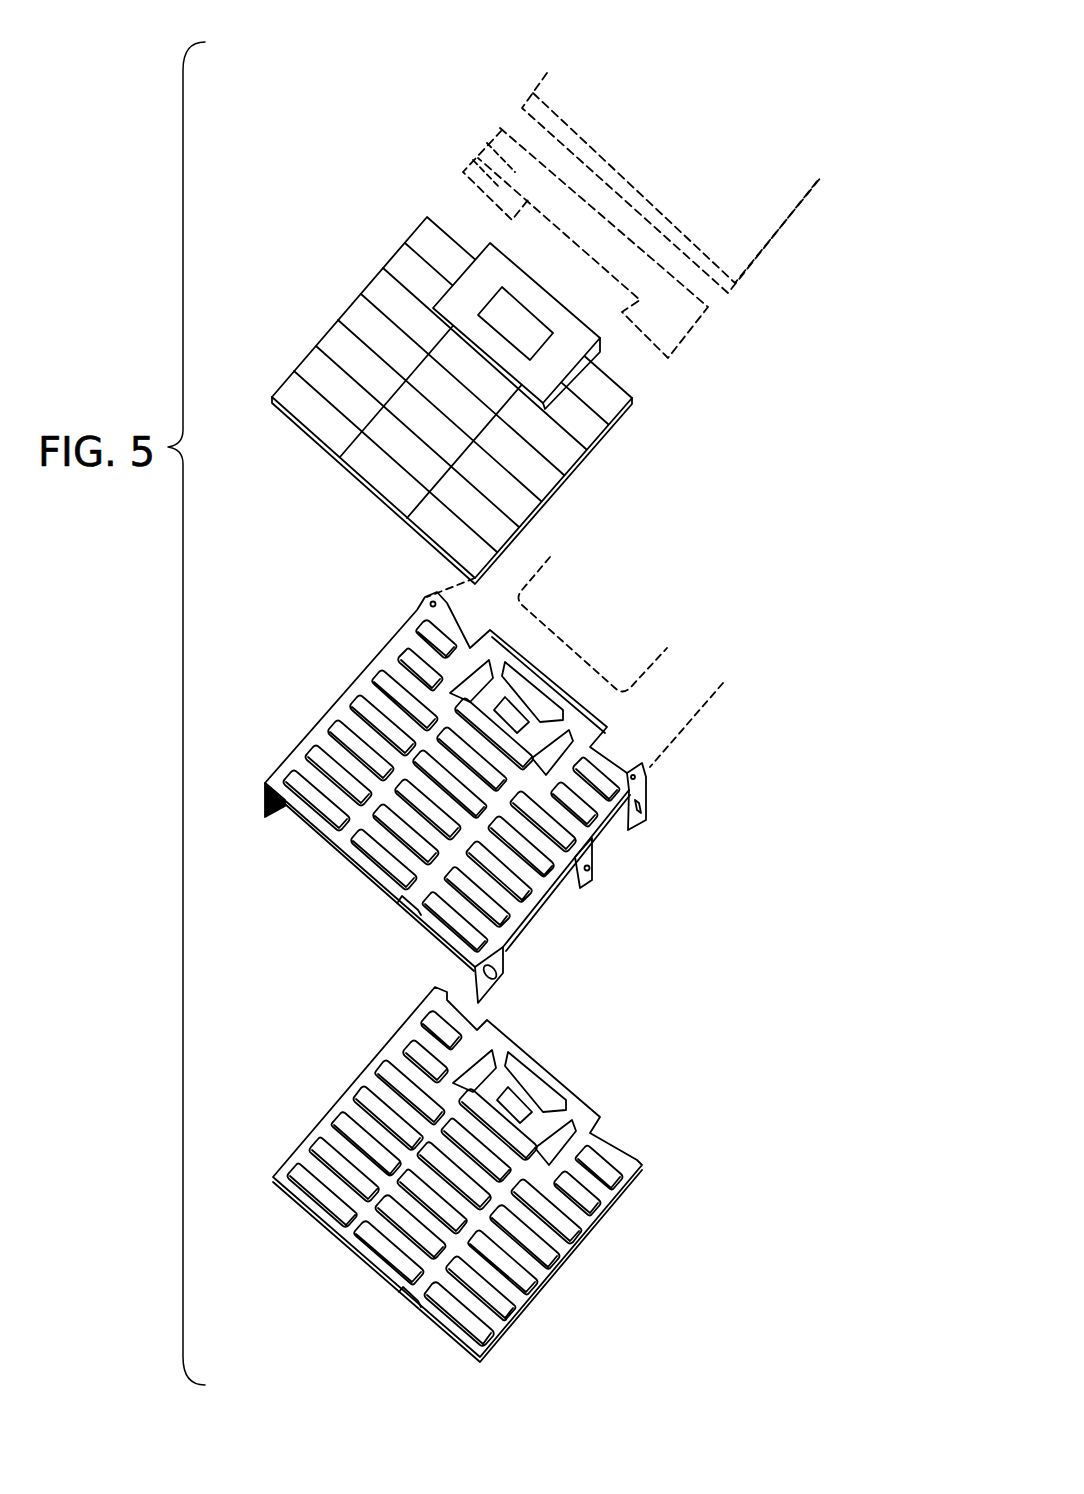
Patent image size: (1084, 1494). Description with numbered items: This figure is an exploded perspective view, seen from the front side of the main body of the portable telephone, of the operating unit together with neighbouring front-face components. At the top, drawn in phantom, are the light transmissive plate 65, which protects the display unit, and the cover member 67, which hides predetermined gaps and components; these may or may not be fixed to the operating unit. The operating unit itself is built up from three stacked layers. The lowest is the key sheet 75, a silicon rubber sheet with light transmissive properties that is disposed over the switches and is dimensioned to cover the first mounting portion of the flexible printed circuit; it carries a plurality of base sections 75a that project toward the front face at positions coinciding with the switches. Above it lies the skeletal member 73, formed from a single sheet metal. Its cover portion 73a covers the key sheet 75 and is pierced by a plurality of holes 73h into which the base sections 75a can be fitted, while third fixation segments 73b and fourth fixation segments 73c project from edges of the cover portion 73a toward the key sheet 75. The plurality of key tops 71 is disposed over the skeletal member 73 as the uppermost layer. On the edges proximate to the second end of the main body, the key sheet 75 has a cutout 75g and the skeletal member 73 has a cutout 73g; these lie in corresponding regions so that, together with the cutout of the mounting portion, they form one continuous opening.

The light transmissive plate 65 is at (532, 93).
The cover member 67 is at (465, 172).
The key tops 71 is at (341, 353).
The skeletal member 73 is at (463, 801).
The holes 73h is at (322, 770).
The cover portion 73a is at (580, 828).
The third fixation segments 73b is at (505, 969).
The fourth fixation segments 73c is at (592, 882).
The cutout 73g is at (407, 901).
The key sheet 75 is at (443, 1175).
The base sections 75a is at (312, 1147).
The cutout 75g is at (405, 1293).